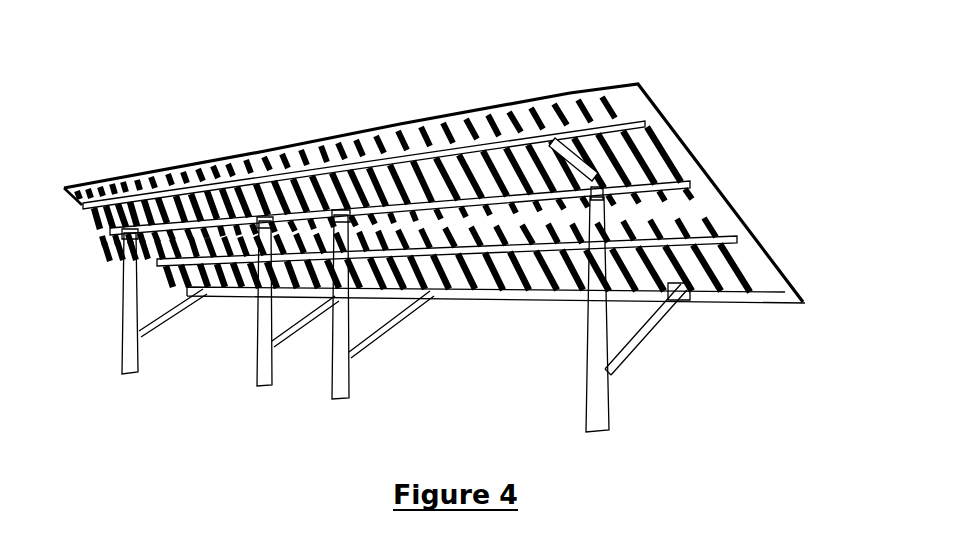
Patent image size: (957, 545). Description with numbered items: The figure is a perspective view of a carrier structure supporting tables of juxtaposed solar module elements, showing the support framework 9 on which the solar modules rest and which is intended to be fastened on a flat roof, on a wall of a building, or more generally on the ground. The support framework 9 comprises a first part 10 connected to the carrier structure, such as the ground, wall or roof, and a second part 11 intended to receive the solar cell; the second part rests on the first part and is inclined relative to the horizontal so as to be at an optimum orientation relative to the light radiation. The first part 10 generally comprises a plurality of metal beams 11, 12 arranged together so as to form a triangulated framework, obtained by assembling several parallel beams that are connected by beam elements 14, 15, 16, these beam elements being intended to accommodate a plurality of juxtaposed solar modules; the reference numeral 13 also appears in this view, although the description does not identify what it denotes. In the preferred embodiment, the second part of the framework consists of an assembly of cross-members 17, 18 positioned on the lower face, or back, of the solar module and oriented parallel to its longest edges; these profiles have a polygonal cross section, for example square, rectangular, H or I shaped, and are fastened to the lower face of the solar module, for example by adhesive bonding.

The support framework 9 is at (662, 341).
The first part 10 is at (340, 327).
The second part 11 is at (573, 169).
The metal beam 12 is at (598, 348).
The brace 13 is at (630, 350).
The beam element 14 is at (638, 121).
The beam element 15 is at (688, 180).
The beam element 16 is at (735, 240).
The cross-member 17 is at (745, 258).
The cross-member 18 is at (748, 250).